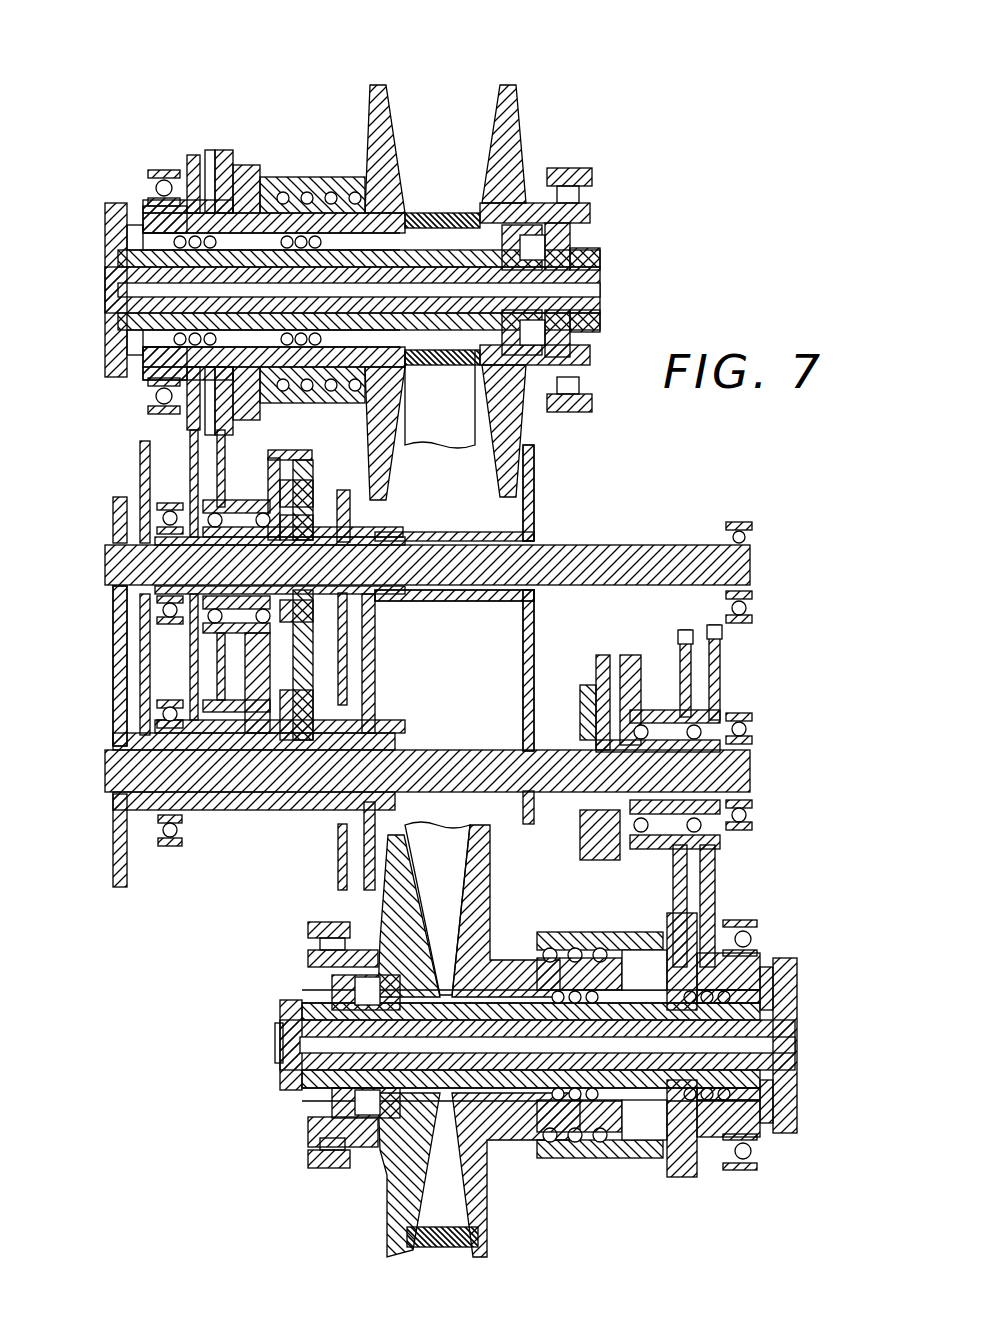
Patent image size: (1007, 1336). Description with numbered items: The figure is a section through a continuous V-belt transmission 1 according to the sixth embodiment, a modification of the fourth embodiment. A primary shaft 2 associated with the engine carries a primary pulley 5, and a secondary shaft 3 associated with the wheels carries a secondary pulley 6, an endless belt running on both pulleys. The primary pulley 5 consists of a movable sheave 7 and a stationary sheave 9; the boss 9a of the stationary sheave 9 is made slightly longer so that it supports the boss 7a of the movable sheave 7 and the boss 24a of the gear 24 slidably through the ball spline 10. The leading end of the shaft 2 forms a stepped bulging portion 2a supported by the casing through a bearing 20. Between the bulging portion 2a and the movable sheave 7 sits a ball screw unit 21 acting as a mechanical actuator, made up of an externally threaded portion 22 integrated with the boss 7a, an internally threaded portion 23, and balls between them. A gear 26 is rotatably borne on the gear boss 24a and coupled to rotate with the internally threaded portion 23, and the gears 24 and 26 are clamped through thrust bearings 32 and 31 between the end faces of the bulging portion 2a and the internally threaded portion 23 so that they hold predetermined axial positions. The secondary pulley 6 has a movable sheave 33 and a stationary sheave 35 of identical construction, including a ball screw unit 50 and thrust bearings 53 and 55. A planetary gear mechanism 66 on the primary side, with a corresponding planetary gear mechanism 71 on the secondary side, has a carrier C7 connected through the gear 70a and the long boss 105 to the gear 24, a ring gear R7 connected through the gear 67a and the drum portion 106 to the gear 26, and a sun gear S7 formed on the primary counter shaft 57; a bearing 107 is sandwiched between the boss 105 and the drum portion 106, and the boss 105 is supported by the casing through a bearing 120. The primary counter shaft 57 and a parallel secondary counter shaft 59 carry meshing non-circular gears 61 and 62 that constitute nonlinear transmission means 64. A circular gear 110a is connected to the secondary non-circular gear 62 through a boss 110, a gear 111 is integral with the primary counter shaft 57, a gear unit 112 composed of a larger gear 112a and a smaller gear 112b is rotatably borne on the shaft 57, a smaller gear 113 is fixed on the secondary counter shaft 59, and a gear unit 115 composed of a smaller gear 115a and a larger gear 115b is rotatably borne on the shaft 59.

The continuous V-belt transmission 1 is at (594, 88).
The primary shaft 2 is at (605, 290).
The stepped bulging portion 2a is at (115, 212).
The secondary shaft 3 is at (795, 1046).
The primary pulley 5 is at (437, 78).
The secondary pulley 6 is at (442, 1254).
The movable sheave 7 is at (374, 85).
The boss of the movable sheave 7a is at (258, 200).
The stationary sheave 9 is at (515, 87).
The boss of the stationary sheave 9a is at (125, 258).
The ball spline 10 is at (165, 300).
The bearing 20 is at (160, 170).
The ball screw unit 21 is at (305, 125).
The externally threaded portion 22 is at (334, 192).
The internally threaded portion 23 is at (298, 186).
The gear 24 is at (193, 155).
The boss of the gear 24a is at (150, 208).
The large-diameter gear 26 is at (226, 150).
The thrust bearing 31 is at (211, 150).
The thrust bearing 32 is at (134, 225).
The movable sheave 33 is at (487, 1220).
The stationary sheave 35 is at (390, 1194).
The ball screw unit 50 is at (623, 1175).
The thrust bearing 53 is at (768, 1140).
The thrust bearing 55 is at (703, 1180).
The primary counter shaft 57 is at (750, 565).
The secondary counter shaft 59 is at (750, 775).
The non-circular gear 61 is at (115, 620).
The non-circular gear 62 is at (113, 832).
The nonlinear transmission means 64 is at (110, 660).
The planetary gear mechanism 66 is at (172, 456).
The gear 67a is at (240, 706).
The gear 70a is at (218, 630).
The planetary gear mechanism 71 is at (738, 686).
The long boss 105 is at (252, 500).
The drum portion 106 is at (250, 645).
The bearing 107 is at (110, 566).
The boss 110 is at (283, 812).
The circular gear 110a is at (340, 868).
The gear 111 is at (376, 645).
The gear unit 112 is at (459, 530).
The larger gear 112a is at (534, 480).
The smaller gear 112b is at (385, 612).
The smaller gear 113 is at (523, 742).
The gear unit 115 is at (228, 812).
The smaller gear 115a is at (152, 848).
The larger gear 115b is at (376, 690).
The bearing 120 is at (140, 470).
The carrier C7 is at (336, 500).
The ring gear R7 is at (300, 455).
The sun gear S7 is at (305, 535).